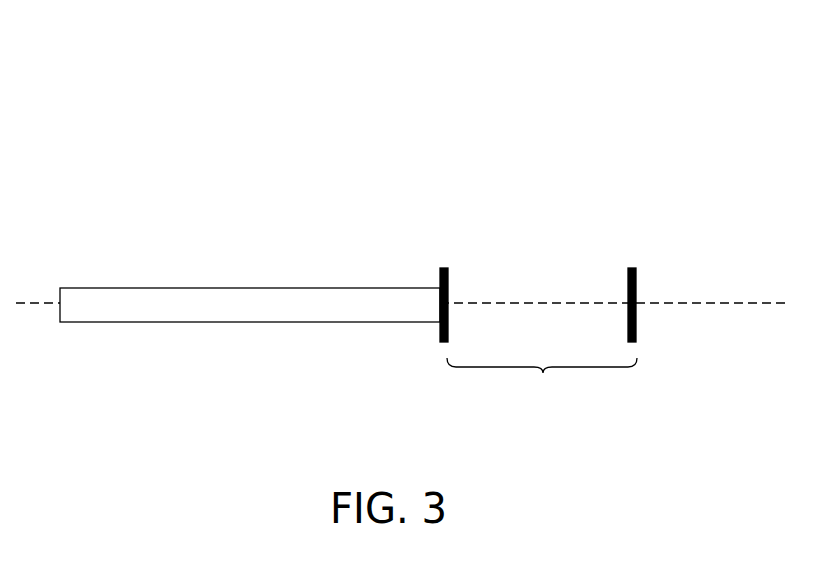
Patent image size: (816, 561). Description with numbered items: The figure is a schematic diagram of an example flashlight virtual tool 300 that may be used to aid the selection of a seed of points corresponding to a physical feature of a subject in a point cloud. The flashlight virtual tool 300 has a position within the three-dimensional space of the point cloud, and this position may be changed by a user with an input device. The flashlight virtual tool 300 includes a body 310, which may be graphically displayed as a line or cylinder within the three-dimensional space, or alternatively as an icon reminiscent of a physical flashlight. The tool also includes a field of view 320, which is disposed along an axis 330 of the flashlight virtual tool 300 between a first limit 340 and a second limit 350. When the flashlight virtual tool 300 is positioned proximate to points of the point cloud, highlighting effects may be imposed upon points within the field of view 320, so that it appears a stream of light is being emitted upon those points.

The flashlight virtual tool 300 is at (622, 53).
The body 310 is at (172, 287).
The field of view 320 is at (542, 381).
The axis 330 is at (747, 302).
The first limit 340 is at (442, 267).
The second limit 350 is at (630, 267).